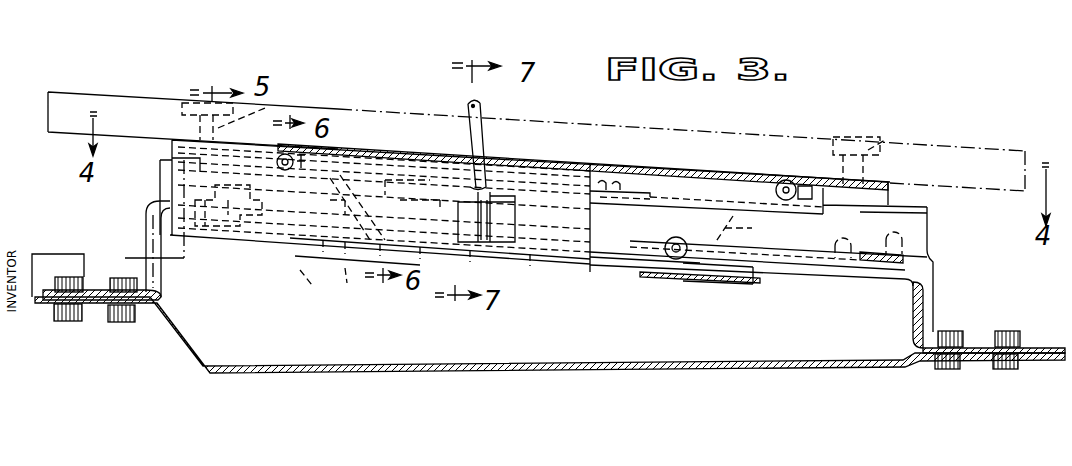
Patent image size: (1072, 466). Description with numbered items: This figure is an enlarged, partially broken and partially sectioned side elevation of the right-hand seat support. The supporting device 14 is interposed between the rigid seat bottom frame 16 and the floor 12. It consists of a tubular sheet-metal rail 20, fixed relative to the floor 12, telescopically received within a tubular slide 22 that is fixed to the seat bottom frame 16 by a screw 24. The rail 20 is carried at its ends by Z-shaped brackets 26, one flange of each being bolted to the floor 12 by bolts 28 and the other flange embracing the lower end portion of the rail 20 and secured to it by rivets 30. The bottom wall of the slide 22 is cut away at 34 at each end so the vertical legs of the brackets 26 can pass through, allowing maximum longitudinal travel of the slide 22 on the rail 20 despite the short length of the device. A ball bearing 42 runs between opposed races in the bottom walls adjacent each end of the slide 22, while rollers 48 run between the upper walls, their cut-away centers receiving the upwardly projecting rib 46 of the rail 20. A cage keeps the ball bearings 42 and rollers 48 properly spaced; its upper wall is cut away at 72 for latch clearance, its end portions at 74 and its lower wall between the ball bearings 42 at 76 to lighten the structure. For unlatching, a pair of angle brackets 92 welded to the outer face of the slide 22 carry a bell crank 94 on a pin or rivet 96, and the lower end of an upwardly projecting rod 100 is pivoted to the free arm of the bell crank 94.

The floor 12 is at (340, 375).
The supporting device 14 is at (147, 199).
The seat bottom frame 16 is at (86, 96).
The rail 20 is at (923, 231).
The slide 22 is at (610, 272).
The screw 24 is at (284, 106).
The brackets 26 is at (166, 273).
The bolts 28 is at (63, 277).
The rivets 30 is at (235, 196).
The cut away portion 34 is at (242, 270).
The ball bearing 42 is at (694, 295).
The bead or rib 46 is at (607, 172).
The roller 48 is at (340, 138).
The cut away portion 72 is at (649, 185).
The cut away portions 74 is at (530, 260).
The cut away portion 76 is at (656, 236).
The angle brackets 92 is at (459, 212).
The bell crank 94 is at (518, 208).
The pin or rivet 96 is at (517, 221).
The rod 100 is at (482, 129).